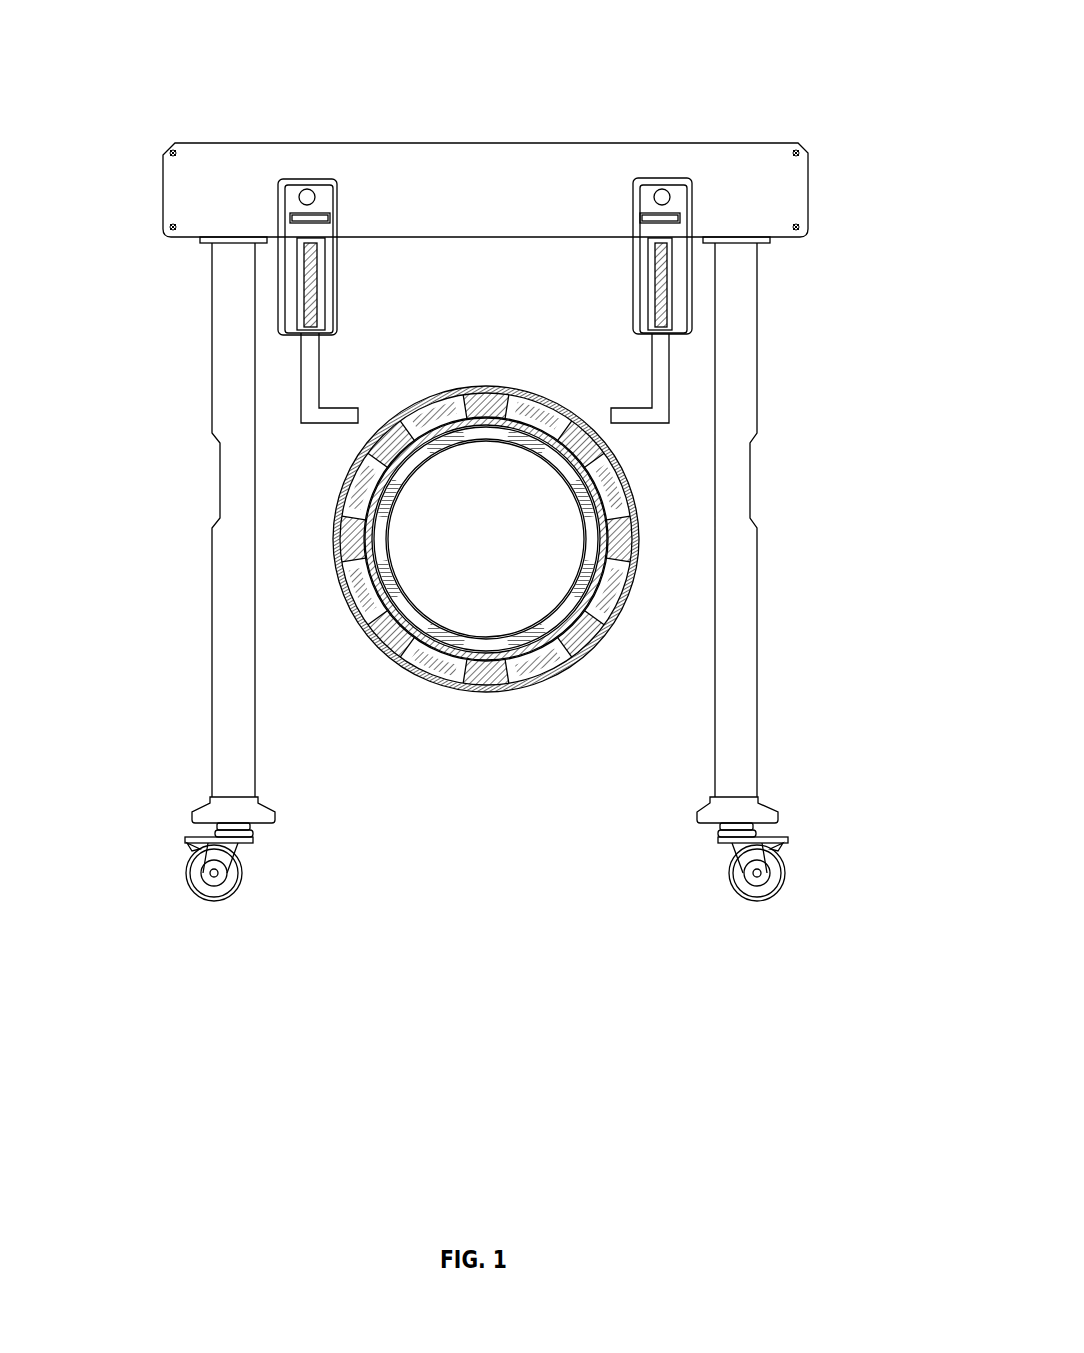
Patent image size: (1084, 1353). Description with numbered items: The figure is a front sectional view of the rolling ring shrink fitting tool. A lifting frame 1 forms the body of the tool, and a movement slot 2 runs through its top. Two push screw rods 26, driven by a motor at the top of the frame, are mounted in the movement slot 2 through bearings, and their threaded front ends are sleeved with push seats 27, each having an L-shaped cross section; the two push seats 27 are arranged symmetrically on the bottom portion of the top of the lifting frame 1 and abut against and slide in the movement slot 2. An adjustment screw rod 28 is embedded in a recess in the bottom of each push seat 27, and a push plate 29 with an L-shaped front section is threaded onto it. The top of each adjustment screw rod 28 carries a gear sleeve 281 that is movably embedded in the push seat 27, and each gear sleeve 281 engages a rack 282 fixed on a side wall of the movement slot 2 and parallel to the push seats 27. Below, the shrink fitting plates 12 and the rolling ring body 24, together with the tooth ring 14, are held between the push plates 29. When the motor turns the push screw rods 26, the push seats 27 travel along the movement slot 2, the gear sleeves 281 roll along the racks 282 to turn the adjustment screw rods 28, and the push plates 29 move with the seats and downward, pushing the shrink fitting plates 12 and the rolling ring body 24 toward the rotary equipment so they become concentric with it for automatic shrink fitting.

The lifting frame 1 is at (468, 176).
The movement slot 2 is at (278, 232).
The shrink fitting plate 12 is at (355, 567).
The tooth ring 14 is at (460, 686).
The rolling ring body 24 is at (575, 663).
The push screw rod 26 is at (307, 190).
The push seat 27 is at (683, 237).
The adjustment screw rod 28 is at (668, 268).
The push plate 29 is at (662, 356).
The gear sleeve 281 is at (662, 192).
The rack 282 is at (640, 218).